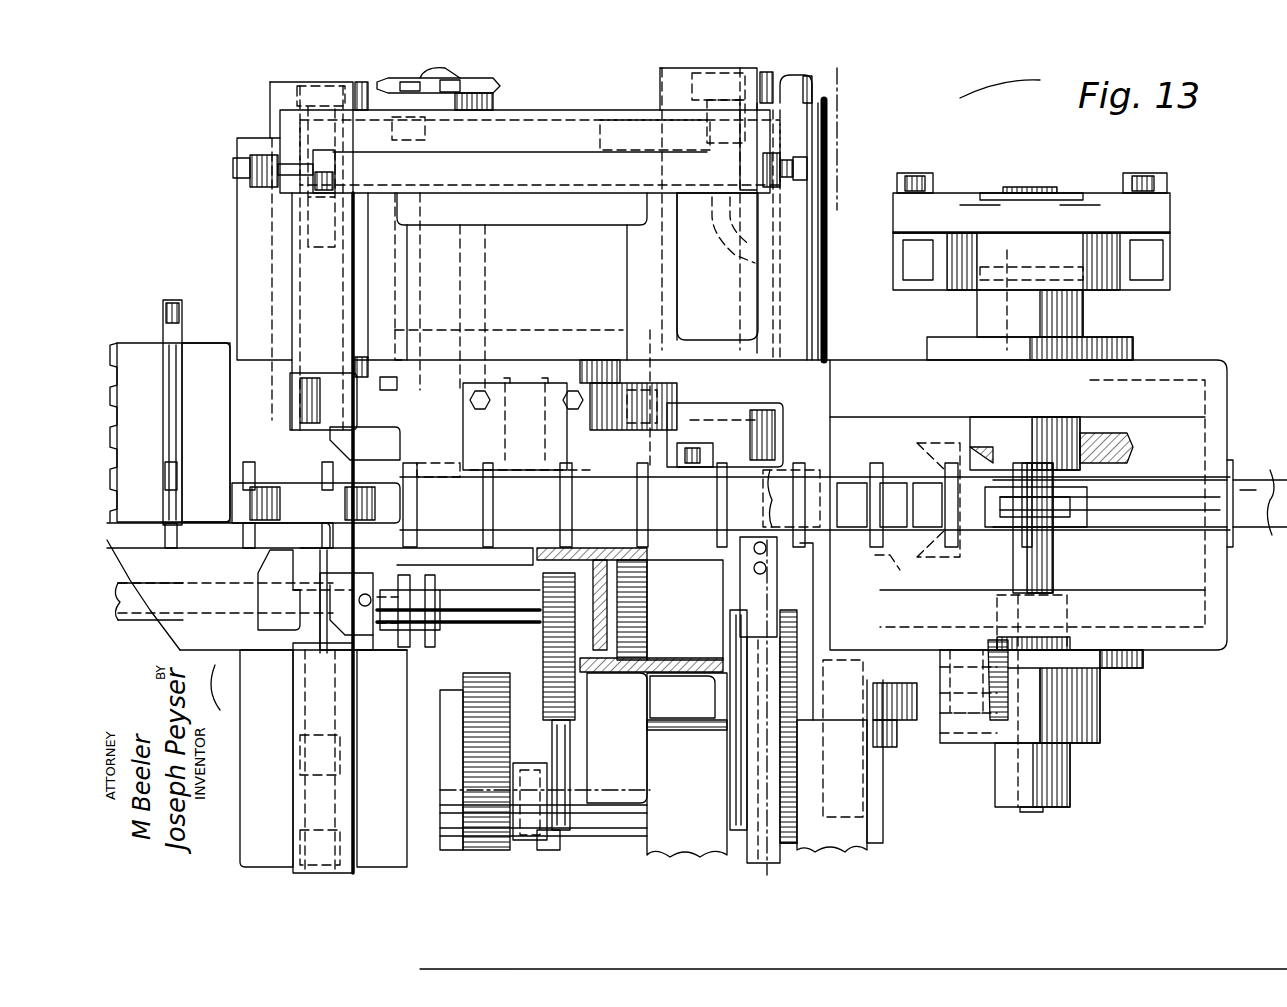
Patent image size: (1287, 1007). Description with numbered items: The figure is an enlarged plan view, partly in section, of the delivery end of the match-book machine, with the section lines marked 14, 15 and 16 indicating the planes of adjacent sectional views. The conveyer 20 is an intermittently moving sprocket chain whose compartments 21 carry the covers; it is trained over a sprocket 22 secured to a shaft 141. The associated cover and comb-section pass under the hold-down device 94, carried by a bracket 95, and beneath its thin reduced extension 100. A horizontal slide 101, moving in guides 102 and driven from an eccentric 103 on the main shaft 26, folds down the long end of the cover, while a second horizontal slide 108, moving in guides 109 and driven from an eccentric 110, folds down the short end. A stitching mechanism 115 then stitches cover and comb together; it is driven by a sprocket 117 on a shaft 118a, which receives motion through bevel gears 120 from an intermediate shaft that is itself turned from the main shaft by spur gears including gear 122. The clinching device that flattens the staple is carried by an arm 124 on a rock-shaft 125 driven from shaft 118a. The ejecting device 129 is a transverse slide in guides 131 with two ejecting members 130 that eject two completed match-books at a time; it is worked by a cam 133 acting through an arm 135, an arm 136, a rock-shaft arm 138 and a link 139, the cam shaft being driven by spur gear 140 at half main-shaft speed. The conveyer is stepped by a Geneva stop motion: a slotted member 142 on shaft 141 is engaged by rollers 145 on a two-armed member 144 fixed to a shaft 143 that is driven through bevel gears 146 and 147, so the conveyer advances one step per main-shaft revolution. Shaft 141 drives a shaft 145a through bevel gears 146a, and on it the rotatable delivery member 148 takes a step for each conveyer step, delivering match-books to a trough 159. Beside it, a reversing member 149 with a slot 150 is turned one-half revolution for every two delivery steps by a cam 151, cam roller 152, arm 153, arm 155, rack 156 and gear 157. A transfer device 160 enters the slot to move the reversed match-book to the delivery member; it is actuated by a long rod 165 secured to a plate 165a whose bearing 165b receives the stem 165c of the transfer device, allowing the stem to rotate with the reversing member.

The shaft 14 is at (130, 525).
The section line 15 is at (844, 86).
The section line 16 is at (346, 76).
The conveyer 20 is at (715, 517).
The cover supporting compartments 21 is at (858, 498).
The sprocket 22 is at (1087, 500).
The main shaft 26 is at (1137, 527).
The hold-down device 94 is at (237, 493).
The bracket 95 is at (197, 350).
The reduced extension 100 is at (324, 503).
The horizontal slide 101 is at (260, 598).
The guides 102 is at (300, 708).
The eccentric 103 is at (277, 537).
The second horizontal slide 108 is at (345, 416).
The guides 109 is at (237, 252).
The eccentric 110 is at (373, 560).
The stitching mechanism 115 is at (527, 405).
The sprocket 117 is at (493, 80).
The shaft 118a is at (460, 297).
The bevel gears 120 is at (440, 478).
The spur gear 122 is at (902, 568).
The arm 124 is at (654, 392).
The rock-shaft 125 is at (813, 90).
The ejecting device 129 is at (777, 437).
The ejecting members 130 is at (753, 463).
The guides 131 is at (838, 300).
The cam 133 is at (790, 843).
The arm 135 is at (738, 274).
The arm 136 is at (770, 137).
The arm 138 is at (710, 130).
The link 139 is at (697, 80).
The spur gear 140 is at (872, 790).
The shaft 141 is at (1053, 580).
The slotted member 142 is at (898, 290).
The shaft 143 is at (1030, 190).
The two-armed member 144 is at (960, 212).
The rollers 145 is at (1170, 235).
The shaft 145a is at (955, 663).
The bevel gear 146 is at (940, 448).
The bevel gears 146a is at (1070, 628).
The bevel gear 147 is at (1103, 437).
The delivery member 148 is at (737, 750).
The reversing member 149 is at (603, 548).
The slot 150 is at (651, 616).
The cam 151 is at (467, 777).
The cam roller 152 is at (517, 760).
The arm 153 is at (543, 837).
The arm 155 is at (560, 743).
The rack 156 is at (563, 690).
The gear 157 is at (540, 630).
The trough 159 is at (750, 818).
The transfer device 160 is at (640, 610).
The rod 165 is at (138, 610).
The plate 165a is at (390, 637).
The bearing 165b is at (417, 583).
The stem 165c is at (610, 603).